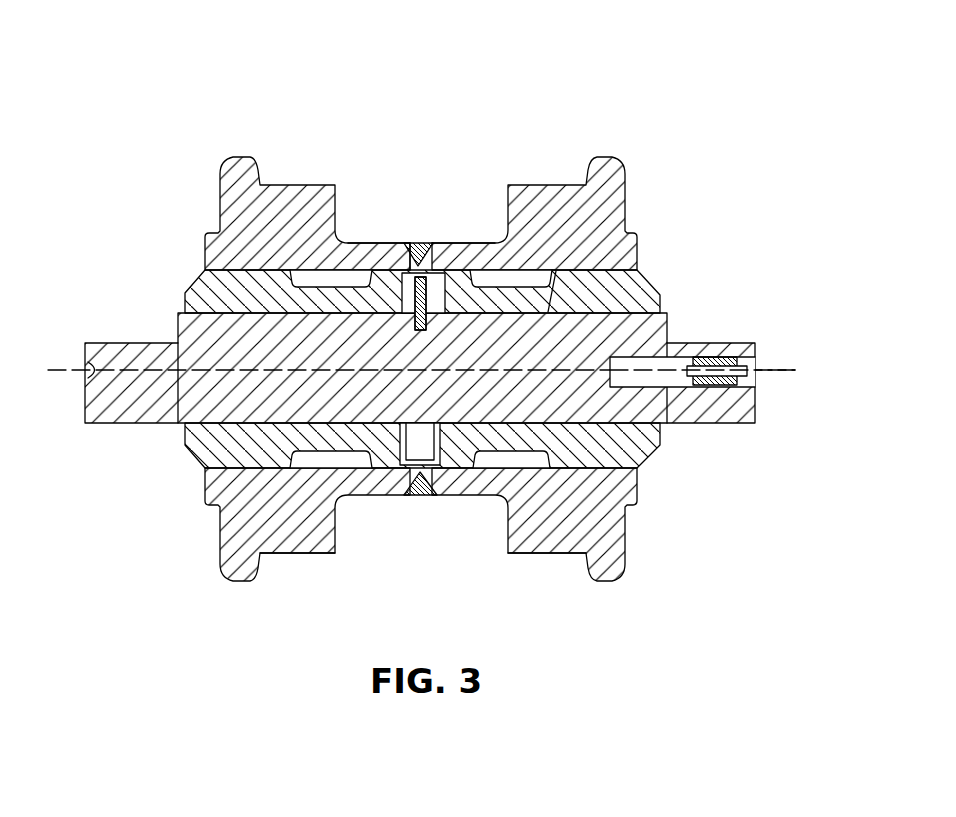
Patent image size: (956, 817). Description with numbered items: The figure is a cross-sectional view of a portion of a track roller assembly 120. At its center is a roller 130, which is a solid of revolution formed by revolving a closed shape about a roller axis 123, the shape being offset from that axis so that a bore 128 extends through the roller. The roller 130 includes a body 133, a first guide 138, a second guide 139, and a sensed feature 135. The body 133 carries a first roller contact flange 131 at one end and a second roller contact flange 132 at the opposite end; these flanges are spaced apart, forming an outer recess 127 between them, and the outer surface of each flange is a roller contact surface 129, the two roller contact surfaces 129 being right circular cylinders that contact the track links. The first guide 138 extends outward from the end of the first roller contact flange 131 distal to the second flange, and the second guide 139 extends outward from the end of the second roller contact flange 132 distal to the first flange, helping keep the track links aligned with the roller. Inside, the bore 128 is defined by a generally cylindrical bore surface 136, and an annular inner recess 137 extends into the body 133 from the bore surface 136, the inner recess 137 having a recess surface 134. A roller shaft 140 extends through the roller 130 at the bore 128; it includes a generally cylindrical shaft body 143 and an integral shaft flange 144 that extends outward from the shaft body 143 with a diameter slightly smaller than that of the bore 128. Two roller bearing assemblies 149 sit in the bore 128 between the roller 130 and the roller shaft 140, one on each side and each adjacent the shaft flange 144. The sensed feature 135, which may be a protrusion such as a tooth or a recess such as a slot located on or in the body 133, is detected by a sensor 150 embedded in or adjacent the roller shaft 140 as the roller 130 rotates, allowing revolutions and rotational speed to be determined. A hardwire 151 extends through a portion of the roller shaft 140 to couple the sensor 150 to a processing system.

The track roller assembly 120 is at (626, 62).
The roller axis 123 is at (263, 368).
The outer recess 127 is at (352, 213).
The bore 128 is at (498, 460).
The roller contact surface 129 is at (297, 558).
The roller 130 is at (430, 370).
The first roller contact flange 131 is at (563, 202).
The second roller contact flange 132 is at (303, 198).
The body 133 is at (440, 247).
The recess surface 134 is at (425, 463).
The sensed feature 135 is at (402, 247).
The bore surface 136 is at (590, 279).
The inner recess 137 is at (398, 494).
The first guide 138 is at (604, 160).
The second guide 139 is at (230, 173).
The roller shaft 140 is at (680, 321).
The shaft body 143 is at (188, 343).
The shaft flange 144 is at (436, 277).
The roller bearing assembly 149 is at (646, 283).
The sensor 150 is at (395, 319).
The hardwire 151 is at (772, 358).